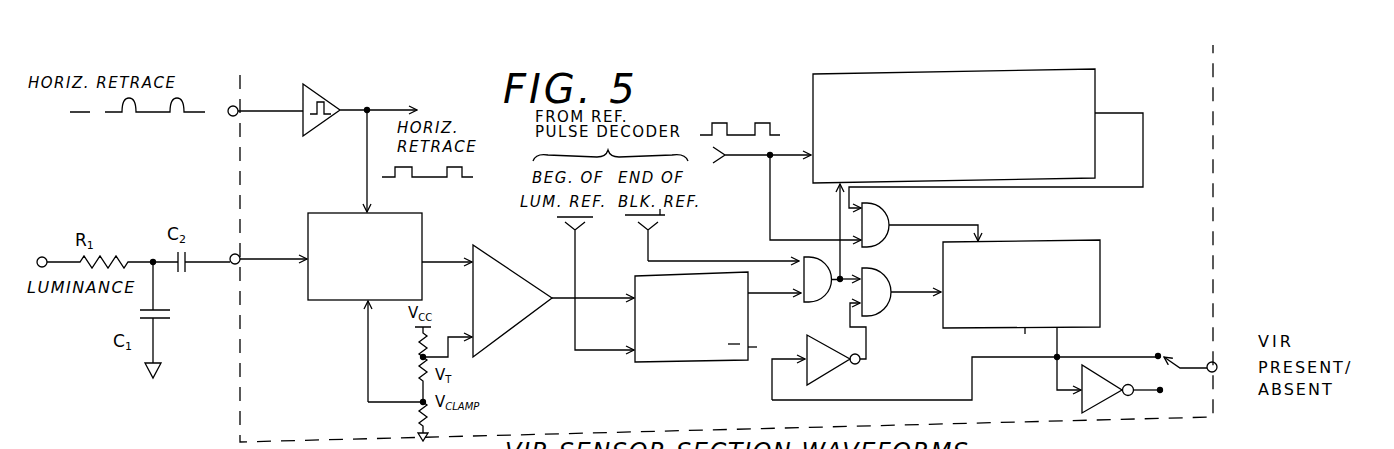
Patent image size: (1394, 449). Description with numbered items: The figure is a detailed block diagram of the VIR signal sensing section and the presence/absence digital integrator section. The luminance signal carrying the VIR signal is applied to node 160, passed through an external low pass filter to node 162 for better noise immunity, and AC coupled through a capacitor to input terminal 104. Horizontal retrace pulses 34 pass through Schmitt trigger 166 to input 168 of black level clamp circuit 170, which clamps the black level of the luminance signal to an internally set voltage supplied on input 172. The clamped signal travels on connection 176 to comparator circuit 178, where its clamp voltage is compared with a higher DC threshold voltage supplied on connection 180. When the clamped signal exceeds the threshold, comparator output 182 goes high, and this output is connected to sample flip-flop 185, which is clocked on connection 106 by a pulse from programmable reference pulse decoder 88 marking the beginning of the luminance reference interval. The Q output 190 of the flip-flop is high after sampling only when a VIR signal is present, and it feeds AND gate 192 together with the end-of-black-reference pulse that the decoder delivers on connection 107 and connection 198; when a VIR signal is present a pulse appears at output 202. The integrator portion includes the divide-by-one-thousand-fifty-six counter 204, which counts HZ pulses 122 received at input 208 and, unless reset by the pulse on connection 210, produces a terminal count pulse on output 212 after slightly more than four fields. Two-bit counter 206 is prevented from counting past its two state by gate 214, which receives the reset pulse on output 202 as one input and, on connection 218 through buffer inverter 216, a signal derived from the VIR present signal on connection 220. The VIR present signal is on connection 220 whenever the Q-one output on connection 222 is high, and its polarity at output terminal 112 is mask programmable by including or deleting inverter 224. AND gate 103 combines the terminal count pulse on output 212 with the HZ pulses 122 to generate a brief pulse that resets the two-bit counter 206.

The horizontal retrace pulses 34 is at (135, 107).
The programmable reference pulse decoder 88 is at (610, 146).
The AND gate 103 is at (890, 211).
The input terminal 104 is at (242, 253).
The connection 106 is at (579, 284).
The connection 107 is at (651, 244).
The VIR present/absent output terminal 112 is at (1216, 362).
The HZ pulses 122 is at (706, 133).
The node 160 is at (43, 256).
The node 162 is at (151, 257).
The Schmitt trigger 166 is at (322, 96).
The input 168 is at (367, 162).
The black level clamp circuit 170 is at (308, 289).
The input 172 is at (368, 357).
The connection 176 is at (428, 262).
The comparator circuit 178 is at (515, 327).
The connection 180 is at (448, 332).
The comparator output 182 is at (572, 285).
The sample flip-flop 185 is at (672, 361).
The Q output 190 is at (792, 291).
The AND gate 192 is at (777, 259).
The connection 198 is at (789, 259).
The output 202 is at (823, 302).
The divide-by-1056 counter 204 is at (1073, 69).
The two-bit counter 206 is at (1053, 213).
The input 208 is at (784, 152).
The connection 210 is at (840, 218).
The output 212 is at (1176, 158).
The gate 214 is at (886, 310).
The buffer inverter 216 is at (835, 369).
The connection 218 is at (866, 340).
The connection 220 is at (1040, 357).
The connection 222 is at (1060, 347).
The inverter 224 is at (1082, 398).